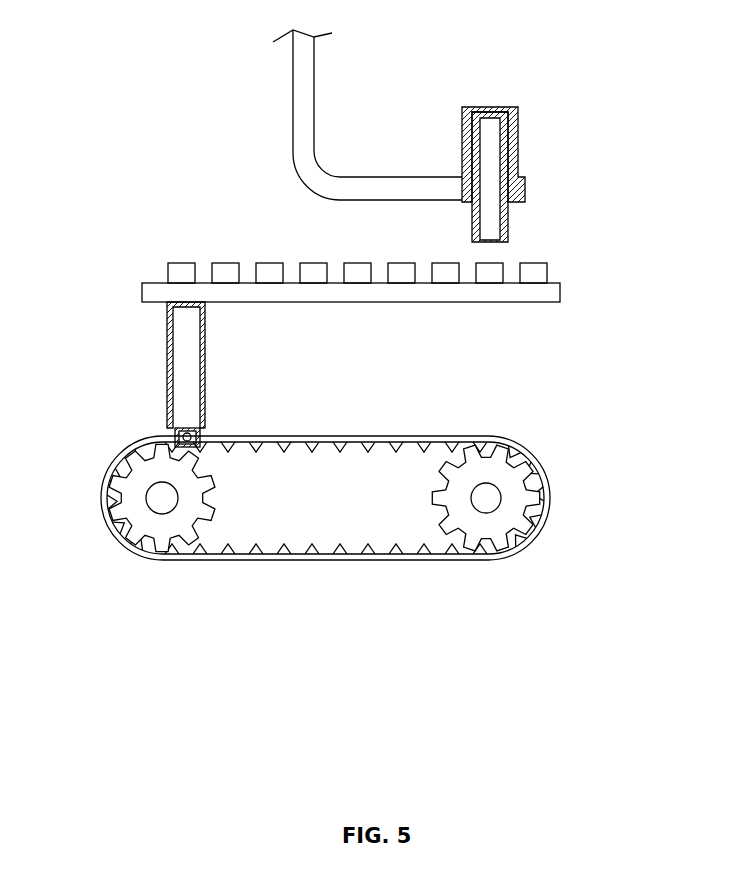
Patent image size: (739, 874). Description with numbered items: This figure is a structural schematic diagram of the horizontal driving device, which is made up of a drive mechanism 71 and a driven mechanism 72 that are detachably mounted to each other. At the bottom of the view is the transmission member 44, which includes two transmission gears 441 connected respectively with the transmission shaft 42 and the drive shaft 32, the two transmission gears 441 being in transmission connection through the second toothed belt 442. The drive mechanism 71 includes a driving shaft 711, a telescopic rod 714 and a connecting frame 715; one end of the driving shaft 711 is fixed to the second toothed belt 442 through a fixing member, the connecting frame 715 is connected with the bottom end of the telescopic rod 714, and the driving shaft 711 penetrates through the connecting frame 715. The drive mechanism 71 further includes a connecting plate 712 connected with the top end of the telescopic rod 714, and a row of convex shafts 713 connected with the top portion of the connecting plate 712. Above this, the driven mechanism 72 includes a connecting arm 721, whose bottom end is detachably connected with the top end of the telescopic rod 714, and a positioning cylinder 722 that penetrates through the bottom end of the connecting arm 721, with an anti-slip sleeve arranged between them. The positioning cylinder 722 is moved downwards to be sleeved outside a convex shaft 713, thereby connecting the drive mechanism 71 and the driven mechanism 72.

The drive shaft 32 is at (160, 500).
The transmission shaft 42 is at (488, 497).
The transmission member 44 is at (325, 581).
The transmission gears 441 is at (283, 663).
The second toothed belt 442 is at (323, 560).
The drive mechanism 71 is at (374, 336).
The driving shaft 711 is at (166, 374).
The connecting plate 712 is at (465, 302).
The convex shafts 713 is at (535, 278).
The telescopic rod 714 is at (205, 356).
The connecting frame 715 is at (205, 426).
The driven mechanism 72 is at (388, 136).
The connecting arm 721 is at (412, 177).
The positioning cylinder 722 is at (518, 143).